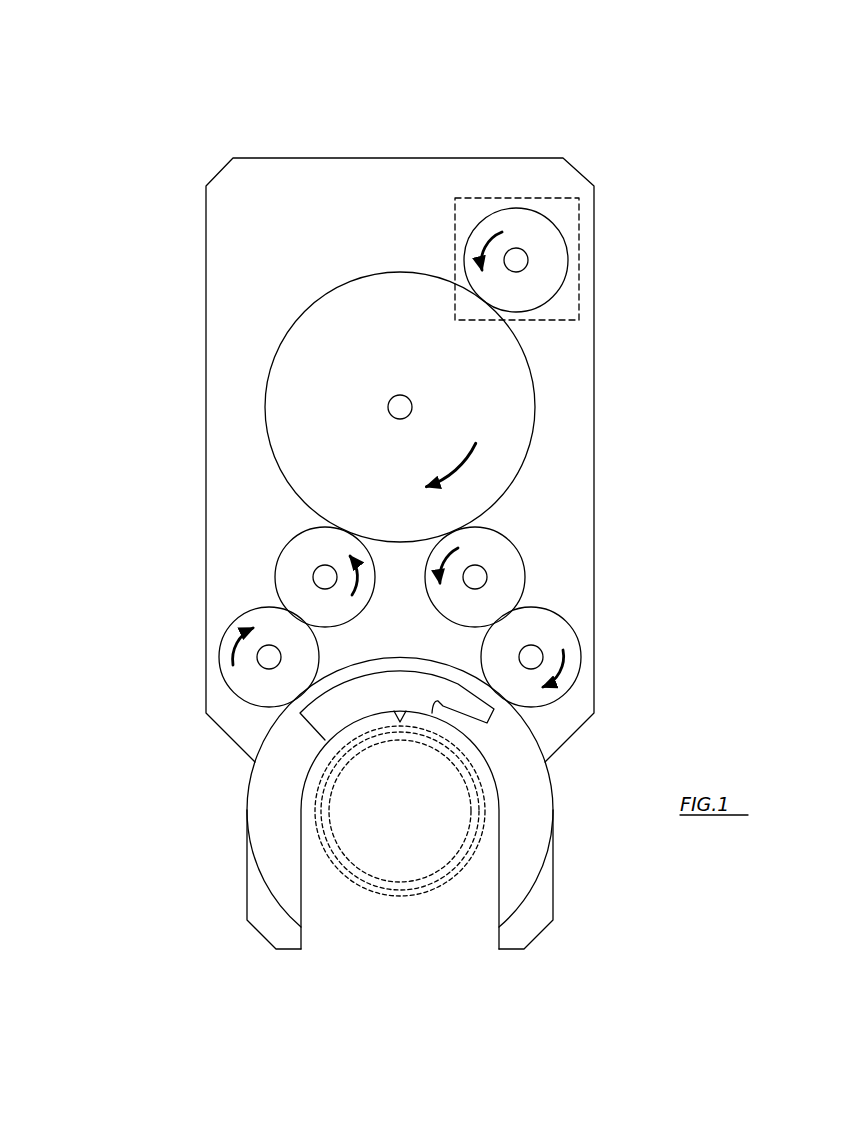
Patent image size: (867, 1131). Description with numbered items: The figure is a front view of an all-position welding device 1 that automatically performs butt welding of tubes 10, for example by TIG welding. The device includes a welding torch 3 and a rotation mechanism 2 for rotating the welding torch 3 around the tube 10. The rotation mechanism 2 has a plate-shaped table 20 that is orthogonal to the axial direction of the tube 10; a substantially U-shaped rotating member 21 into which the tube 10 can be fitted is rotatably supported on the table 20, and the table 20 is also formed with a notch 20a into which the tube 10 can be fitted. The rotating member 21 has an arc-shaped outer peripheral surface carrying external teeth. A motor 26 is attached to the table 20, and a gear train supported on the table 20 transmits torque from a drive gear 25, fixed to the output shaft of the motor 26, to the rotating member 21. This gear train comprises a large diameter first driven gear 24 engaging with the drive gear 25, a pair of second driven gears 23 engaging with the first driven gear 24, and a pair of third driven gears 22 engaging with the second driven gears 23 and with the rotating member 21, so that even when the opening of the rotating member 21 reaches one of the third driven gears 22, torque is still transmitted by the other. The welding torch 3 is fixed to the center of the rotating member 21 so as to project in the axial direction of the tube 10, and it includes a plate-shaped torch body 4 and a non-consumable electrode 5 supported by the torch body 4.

The all-position welding device 1 is at (130, 80).
The rotation mechanism 2 is at (203, 353).
The welding torch 3 is at (300, 713).
The torch body 4 is at (352, 730).
The non-consumable electrode 5 is at (400, 722).
The tube 10 is at (421, 895).
The table 20 is at (237, 250).
The notch 20a is at (470, 937).
The rotating member 21 is at (531, 825).
The third driven gears 22 is at (223, 643).
The second driven gears 23 is at (285, 556).
The first driven gear 24 is at (300, 460).
The drive gear 25 is at (531, 224).
The motor 26 is at (488, 197).